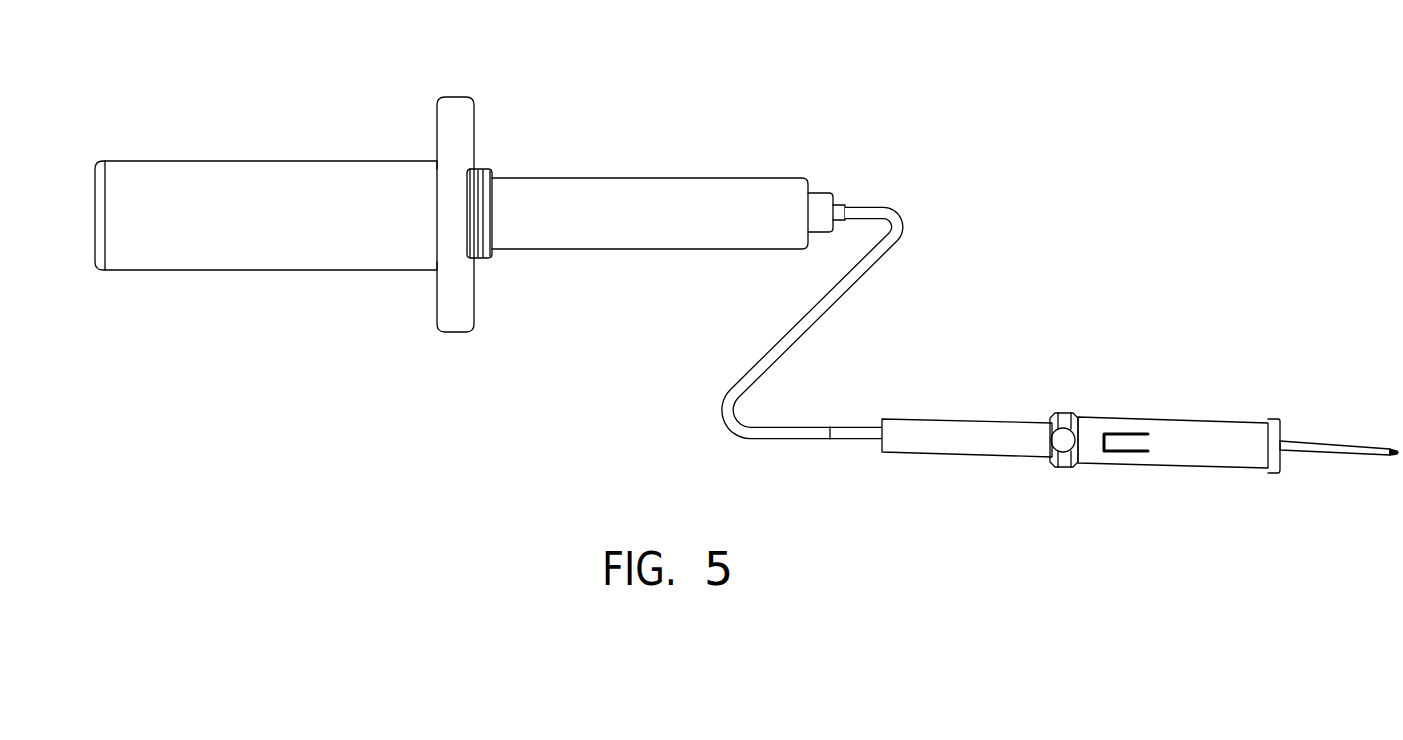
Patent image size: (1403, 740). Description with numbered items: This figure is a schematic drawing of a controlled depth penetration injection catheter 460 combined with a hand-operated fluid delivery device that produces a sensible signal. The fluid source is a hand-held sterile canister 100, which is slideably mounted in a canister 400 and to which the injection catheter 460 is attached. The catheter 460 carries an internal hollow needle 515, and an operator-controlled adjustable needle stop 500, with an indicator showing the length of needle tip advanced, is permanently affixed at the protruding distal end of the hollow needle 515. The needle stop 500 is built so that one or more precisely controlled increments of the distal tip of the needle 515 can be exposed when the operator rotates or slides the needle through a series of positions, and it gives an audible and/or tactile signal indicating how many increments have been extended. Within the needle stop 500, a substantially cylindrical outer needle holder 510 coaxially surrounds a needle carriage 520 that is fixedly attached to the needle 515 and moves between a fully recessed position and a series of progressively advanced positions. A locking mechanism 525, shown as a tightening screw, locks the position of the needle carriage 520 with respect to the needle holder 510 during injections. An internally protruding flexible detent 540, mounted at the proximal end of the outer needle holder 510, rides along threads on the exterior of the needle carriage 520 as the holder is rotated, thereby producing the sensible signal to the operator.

The canister 400 is at (232, 183).
The hand-held sterile canister 100 is at (607, 193).
The controlled depth penetration injection catheter 460 is at (858, 282).
The adjustable needle stop 500 is at (1140, 442).
The needle carriage 520 is at (968, 427).
The locking mechanism 525 is at (1060, 448).
The flexible detent 540 is at (1120, 445).
The outer needle holder 510 is at (1203, 457).
The hollow needle 515 is at (1335, 443).